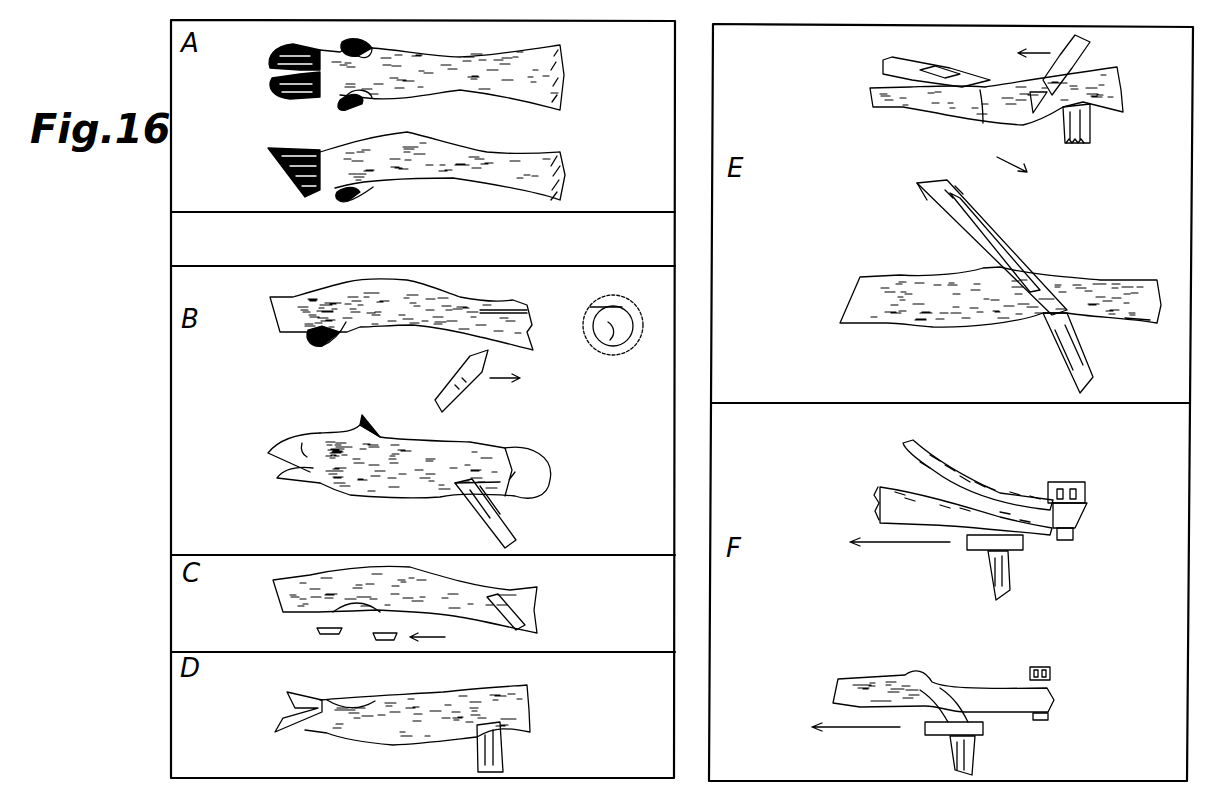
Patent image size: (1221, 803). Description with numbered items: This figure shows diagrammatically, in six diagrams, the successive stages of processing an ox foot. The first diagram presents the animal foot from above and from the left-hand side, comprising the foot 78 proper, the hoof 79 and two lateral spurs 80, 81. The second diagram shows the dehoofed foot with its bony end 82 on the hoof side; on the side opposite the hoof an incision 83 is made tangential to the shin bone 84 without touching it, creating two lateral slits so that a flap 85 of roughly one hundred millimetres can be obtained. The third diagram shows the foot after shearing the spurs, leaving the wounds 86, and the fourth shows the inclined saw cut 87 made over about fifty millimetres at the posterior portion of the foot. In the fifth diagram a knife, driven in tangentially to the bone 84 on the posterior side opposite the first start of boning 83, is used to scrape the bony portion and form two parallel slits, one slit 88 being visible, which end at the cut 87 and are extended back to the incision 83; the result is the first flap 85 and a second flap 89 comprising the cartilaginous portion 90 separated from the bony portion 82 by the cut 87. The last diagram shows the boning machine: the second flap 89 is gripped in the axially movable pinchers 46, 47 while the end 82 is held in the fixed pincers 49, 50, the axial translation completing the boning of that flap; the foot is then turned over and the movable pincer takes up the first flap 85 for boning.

The foot 78 is at (480, 57).
The hoof 79 is at (275, 51).
The lateral spur 80 is at (365, 42).
The lateral spur 81 is at (368, 102).
The bony end 82 is at (278, 318).
The incision 83 is at (503, 310).
The shin bone 84 is at (610, 340).
The flap 85 is at (478, 512).
The wound 86 is at (350, 605).
The cutting 87 is at (288, 702).
The slit 88 is at (983, 118).
The second flap 89 is at (953, 220).
The cartilaginous portion 90 is at (922, 190).
The fixed pincer 50 is at (1070, 482).
The fixed pincer 49 is at (1073, 533).
The axially movable pincher 46 is at (968, 635).
The axially movable pincher 47 is at (977, 548).